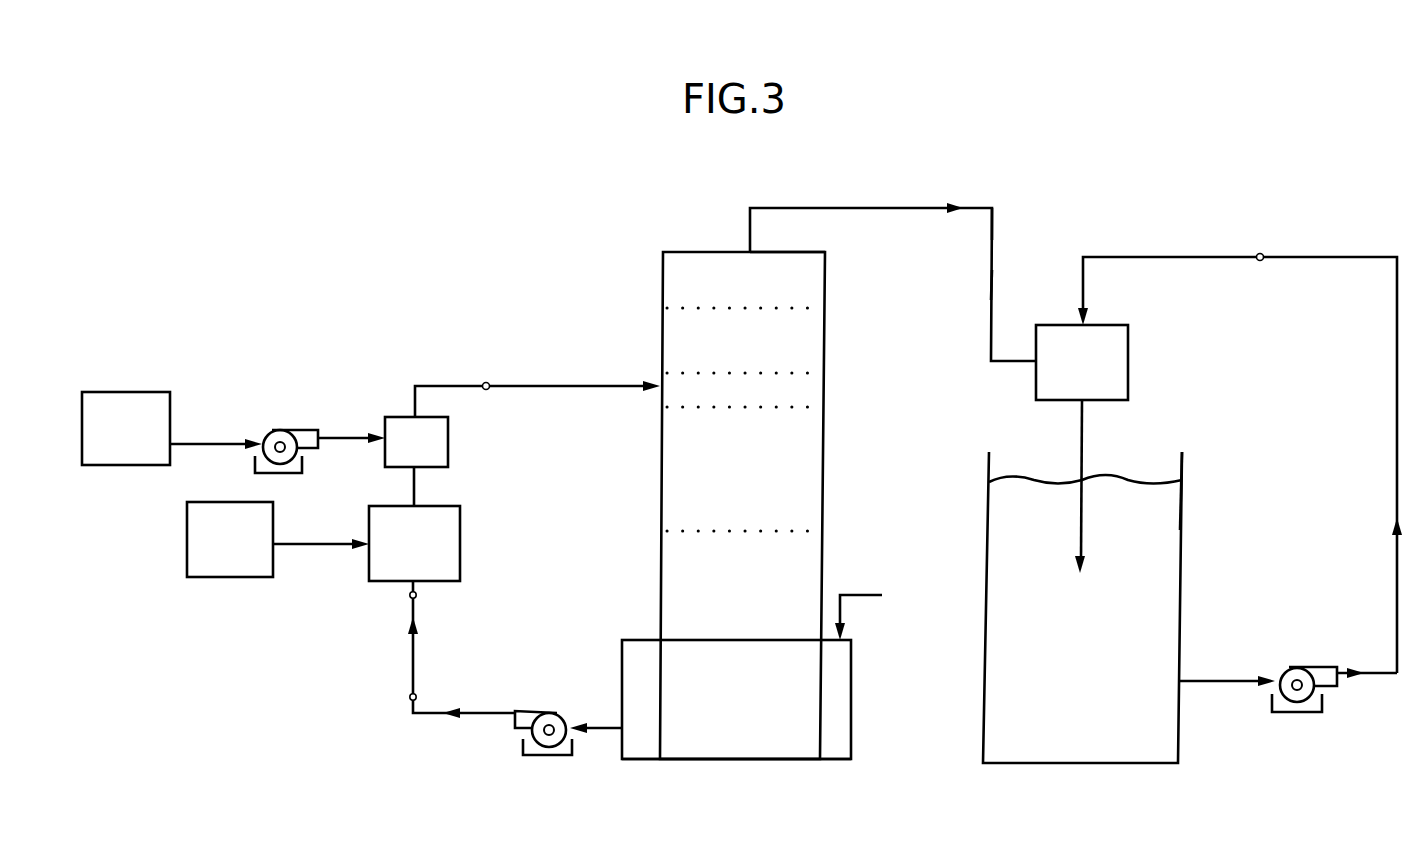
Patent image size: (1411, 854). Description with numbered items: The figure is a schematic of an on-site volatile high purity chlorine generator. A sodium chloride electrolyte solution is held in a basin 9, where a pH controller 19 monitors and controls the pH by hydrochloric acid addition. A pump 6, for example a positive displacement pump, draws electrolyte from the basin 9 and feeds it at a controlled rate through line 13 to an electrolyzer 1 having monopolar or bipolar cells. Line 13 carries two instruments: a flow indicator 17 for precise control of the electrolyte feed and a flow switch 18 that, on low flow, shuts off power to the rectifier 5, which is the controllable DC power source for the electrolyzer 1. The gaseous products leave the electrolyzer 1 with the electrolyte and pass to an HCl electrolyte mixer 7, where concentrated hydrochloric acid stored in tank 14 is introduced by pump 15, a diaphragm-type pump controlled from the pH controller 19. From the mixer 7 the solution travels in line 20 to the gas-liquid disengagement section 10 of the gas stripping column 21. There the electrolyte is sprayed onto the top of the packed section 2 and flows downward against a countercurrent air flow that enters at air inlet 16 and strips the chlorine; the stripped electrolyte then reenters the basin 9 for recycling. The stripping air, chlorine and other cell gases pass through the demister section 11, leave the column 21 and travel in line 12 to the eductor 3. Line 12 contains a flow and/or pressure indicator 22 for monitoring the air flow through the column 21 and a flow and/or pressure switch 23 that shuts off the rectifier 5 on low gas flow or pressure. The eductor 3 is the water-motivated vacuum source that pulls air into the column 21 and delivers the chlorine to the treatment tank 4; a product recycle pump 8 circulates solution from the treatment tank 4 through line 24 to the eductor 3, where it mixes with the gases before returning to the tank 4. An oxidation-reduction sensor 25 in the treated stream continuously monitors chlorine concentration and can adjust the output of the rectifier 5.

The electrolyzer 1 is at (475, 547).
The packed section 2 is at (840, 483).
The eductor 3 is at (1143, 361).
The treatment tank 4 is at (1195, 606).
The rectifier 5 is at (288, 519).
The pump 6 is at (552, 698).
The HCl electrolyte mixer 7 is at (463, 441).
The product recycle pump 8 is at (1298, 652).
The basin 9 is at (866, 659).
The gas-liquid disengagement section 10 is at (840, 390).
The demister section 11 is at (840, 342).
The line 12 is at (848, 446).
The line 13 is at (409, 697).
The tank 14 is at (126, 378).
The pump 15 is at (281, 415).
The air inlet 16 is at (882, 582).
The flow indicator 17 is at (400, 646).
The flow switch 18 is at (409, 595).
The pH controller 19 is at (866, 743).
The line 20 is at (486, 382).
The gas stripping column 21 is at (700, 245).
The flow and/or pressure indicator 22 is at (1010, 222).
The flow and/or pressure switch 23 is at (1009, 287).
The line 24 is at (1261, 253).
The oxidation-reduction sensor 25 is at (1195, 509).